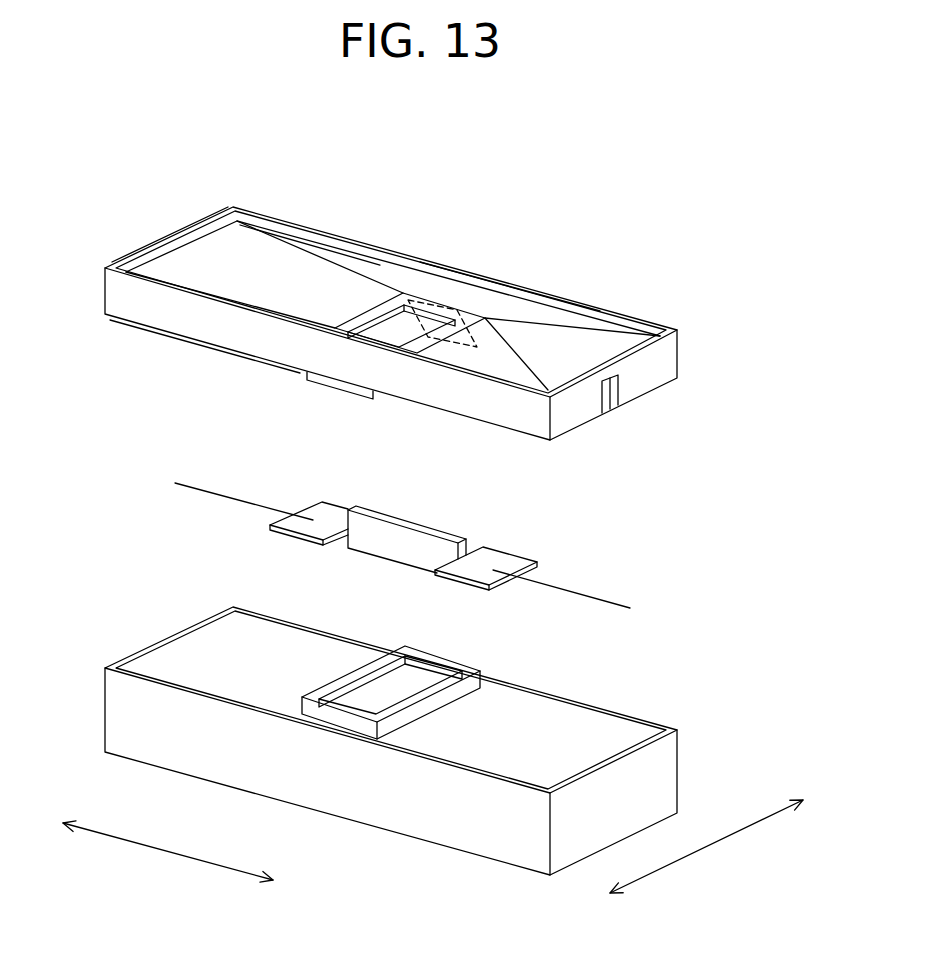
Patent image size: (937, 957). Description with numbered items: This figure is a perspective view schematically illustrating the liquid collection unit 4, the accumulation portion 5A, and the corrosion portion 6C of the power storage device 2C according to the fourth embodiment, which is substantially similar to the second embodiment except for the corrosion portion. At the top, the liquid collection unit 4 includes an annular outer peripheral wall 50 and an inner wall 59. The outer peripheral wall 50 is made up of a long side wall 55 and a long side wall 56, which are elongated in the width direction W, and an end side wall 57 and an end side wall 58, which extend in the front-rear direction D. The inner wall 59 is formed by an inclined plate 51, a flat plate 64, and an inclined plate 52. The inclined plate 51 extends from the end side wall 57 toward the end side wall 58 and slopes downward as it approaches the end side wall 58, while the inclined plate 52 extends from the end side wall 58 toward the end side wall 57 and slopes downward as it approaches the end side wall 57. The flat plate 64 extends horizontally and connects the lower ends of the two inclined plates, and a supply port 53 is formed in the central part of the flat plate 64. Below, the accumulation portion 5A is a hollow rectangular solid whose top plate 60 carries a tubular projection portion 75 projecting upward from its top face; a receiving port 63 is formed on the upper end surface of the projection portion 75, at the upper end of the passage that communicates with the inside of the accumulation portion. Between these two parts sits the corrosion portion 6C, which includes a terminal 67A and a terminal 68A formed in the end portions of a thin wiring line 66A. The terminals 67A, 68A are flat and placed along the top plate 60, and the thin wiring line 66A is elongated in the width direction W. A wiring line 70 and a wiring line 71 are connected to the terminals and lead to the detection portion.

The power storage device 2C is at (185, 135).
The liquid collection unit 4 is at (657, 213).
The accumulation portion 5A is at (105, 593).
The corrosion portion 6C is at (522, 490).
The outer peripheral wall 50 is at (628, 312).
The inclined plate 51 is at (580, 338).
The inclined plate 52 is at (254, 245).
The supply port 53 is at (407, 322).
The long side wall 55 is at (225, 332).
The long side wall 56 is at (522, 283).
The end side wall 57 is at (660, 371).
The end side wall 58 is at (178, 236).
The inner wall 59 is at (322, 272).
The top plate 60 is at (585, 722).
The receiving port 63 is at (370, 697).
The flat plate 64 is at (448, 313).
The thin wiring line 66A is at (426, 527).
The terminal 67A is at (503, 553).
The terminal 68A is at (320, 506).
The wiring line 70 is at (614, 600).
The wiring line 71 is at (190, 484).
The projection portion 75 is at (473, 665).